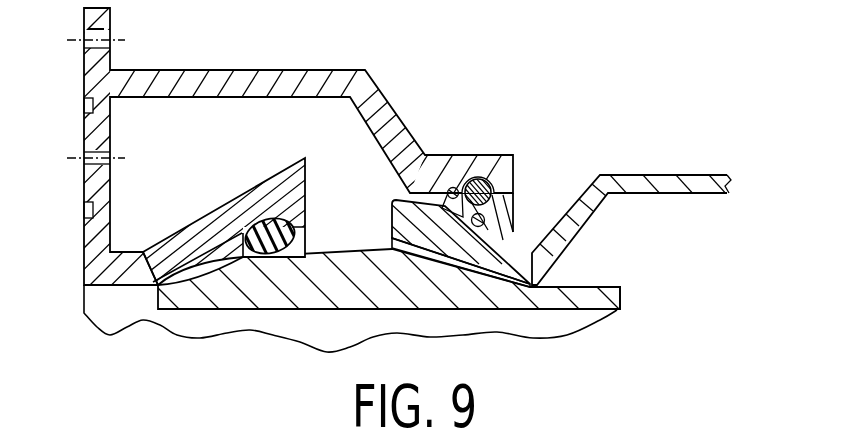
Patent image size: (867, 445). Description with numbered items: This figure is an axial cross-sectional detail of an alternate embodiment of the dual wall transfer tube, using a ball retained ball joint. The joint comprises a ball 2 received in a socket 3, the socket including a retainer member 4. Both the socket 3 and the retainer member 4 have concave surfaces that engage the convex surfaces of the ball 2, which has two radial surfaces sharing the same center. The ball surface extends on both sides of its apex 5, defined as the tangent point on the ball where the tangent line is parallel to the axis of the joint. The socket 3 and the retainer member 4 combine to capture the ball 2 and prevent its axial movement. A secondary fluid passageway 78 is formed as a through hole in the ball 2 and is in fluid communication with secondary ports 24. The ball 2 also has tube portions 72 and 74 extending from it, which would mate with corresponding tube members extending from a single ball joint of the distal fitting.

The secondary ports 24 is at (84, 152).
The ball 2 is at (316, 290).
The tube portion 72 is at (664, 248).
The socket 3 is at (190, 225).
The apex 5 is at (396, 200).
The secondary fluid passageway 78 is at (437, 260).
The retainer member 4 is at (513, 208).
The tube portion 74 is at (730, 116).